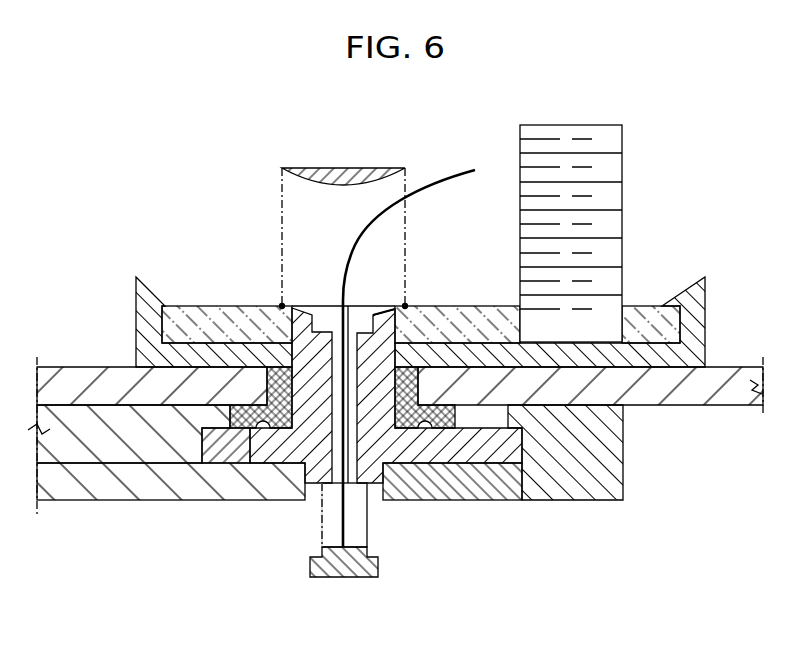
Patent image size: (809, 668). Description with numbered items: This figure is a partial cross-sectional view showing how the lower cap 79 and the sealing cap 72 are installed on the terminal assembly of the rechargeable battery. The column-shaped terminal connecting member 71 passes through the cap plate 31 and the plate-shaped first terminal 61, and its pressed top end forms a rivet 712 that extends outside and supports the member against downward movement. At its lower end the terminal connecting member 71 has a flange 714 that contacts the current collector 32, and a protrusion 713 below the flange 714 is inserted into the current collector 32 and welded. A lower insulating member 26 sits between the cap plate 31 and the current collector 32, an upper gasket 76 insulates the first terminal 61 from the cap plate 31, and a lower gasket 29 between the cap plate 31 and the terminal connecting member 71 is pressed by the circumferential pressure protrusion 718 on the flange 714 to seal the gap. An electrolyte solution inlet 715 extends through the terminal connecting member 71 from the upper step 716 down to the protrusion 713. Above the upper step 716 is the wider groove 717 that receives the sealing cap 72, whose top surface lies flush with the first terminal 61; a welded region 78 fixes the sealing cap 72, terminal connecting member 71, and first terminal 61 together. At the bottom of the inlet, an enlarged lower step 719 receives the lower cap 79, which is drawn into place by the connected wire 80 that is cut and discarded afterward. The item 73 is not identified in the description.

The lower insulating member 26 is at (85, 440).
The lower gasket 29 is at (262, 432).
The cap plate 31 is at (735, 398).
The current collector 32 is at (152, 482).
The first terminal 61 is at (188, 312).
The terminal connecting member 71 is at (260, 332).
The sealing cap 72 is at (343, 168).
The coil block 73 is at (615, 138).
The upper gasket 76 is at (692, 292).
The welded region 78 is at (282, 306).
The lower cap 79 is at (347, 577).
The wire 80 is at (433, 184).
The rivet 712 is at (420, 306).
The protrusion 713 is at (383, 467).
The flange 714 is at (222, 450).
The electrolyte solution inlet 715 is at (300, 485).
The upper step 716 is at (366, 307).
The groove 717 is at (303, 306).
The pressure protrusion 718 is at (455, 415).
The lower step 719 is at (358, 500).